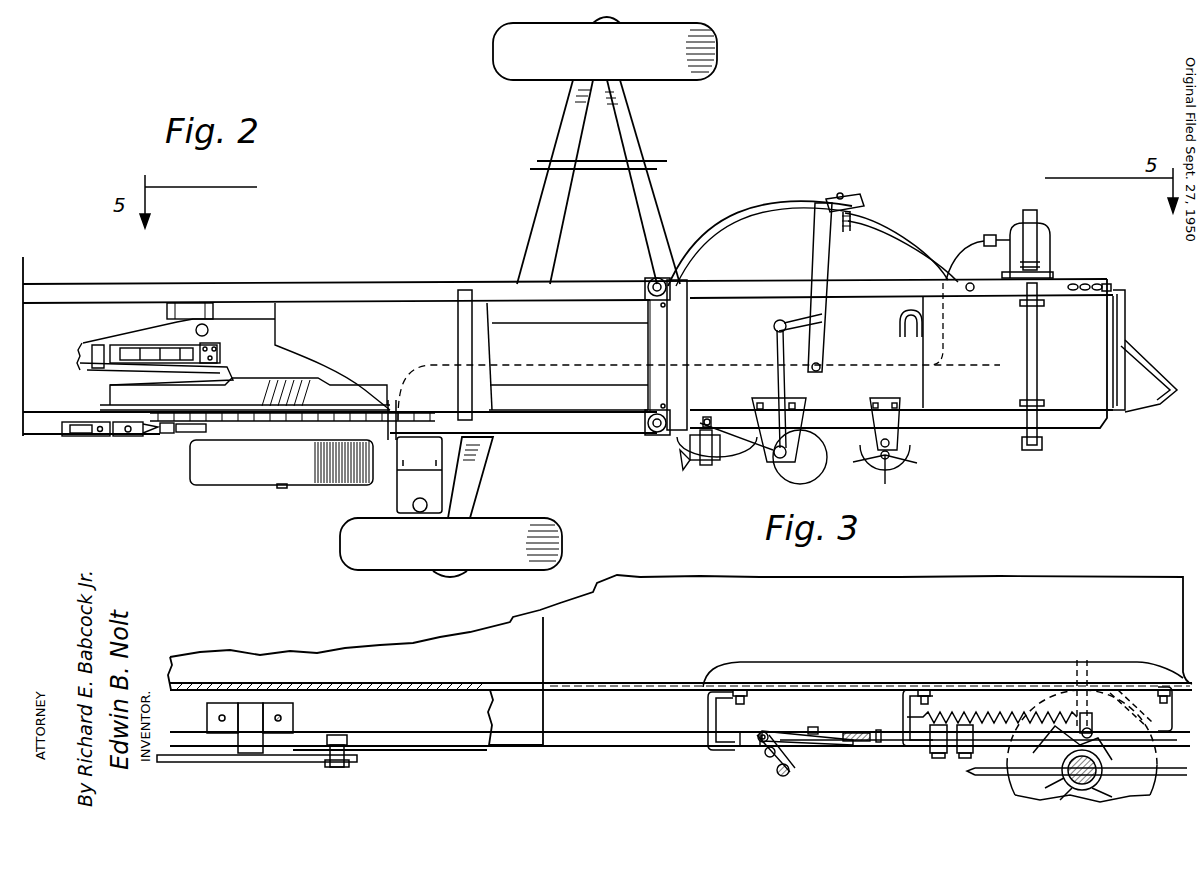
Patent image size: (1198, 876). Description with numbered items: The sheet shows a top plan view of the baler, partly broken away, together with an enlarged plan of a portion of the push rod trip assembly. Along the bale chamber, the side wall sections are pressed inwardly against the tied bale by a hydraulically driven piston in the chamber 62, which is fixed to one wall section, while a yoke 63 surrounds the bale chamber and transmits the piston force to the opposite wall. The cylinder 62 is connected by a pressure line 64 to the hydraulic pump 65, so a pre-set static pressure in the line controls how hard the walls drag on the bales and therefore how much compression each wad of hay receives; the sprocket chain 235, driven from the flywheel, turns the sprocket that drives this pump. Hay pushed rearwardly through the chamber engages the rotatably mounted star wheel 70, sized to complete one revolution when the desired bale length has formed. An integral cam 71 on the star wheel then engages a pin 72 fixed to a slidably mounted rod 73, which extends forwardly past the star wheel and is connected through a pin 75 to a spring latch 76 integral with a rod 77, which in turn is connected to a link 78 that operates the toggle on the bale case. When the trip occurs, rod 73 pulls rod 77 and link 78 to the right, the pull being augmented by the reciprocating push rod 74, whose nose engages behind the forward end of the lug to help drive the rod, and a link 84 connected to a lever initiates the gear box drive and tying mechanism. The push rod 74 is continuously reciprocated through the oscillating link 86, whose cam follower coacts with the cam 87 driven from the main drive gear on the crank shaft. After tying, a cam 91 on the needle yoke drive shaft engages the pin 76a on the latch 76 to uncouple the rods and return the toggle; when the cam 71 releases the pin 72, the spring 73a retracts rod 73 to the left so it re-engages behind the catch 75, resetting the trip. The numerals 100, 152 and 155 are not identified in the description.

In FIG. 2, the chamber 62 is at (1050, 245).
In FIG. 2, the yoke 63 is at (1037, 383).
In FIG. 2, the pressure line 64 is at (946, 360).
In FIG. 2, the hydraulic pump 65 is at (430, 487).
In FIG. 2, the star wheel 70 is at (913, 463).
In FIG. 3, the cam 71 is at (1050, 748).
In FIG. 3, the pin 72 is at (1087, 733).
In FIG. 3, the rod 73 is at (847, 733).
In FIG. 3, the spring 73a is at (1033, 713).
In FIG. 2, the push rod 74 is at (140, 434).
In FIG. 3, the push rod 74 is at (604, 735).
In FIG. 3, the pin 75 is at (813, 727).
In FIG. 3, the spring latch 76 is at (778, 730).
In FIG. 3, the pin 76a is at (749, 726).
In FIG. 3, the rod 77 is at (753, 748).
In FIG. 3, the link 78 is at (277, 762).
In FIG. 3, the link 84 is at (982, 717).
In FIG. 2, the link 86 is at (162, 437).
In FIG. 2, the cam 87 is at (180, 433).
In FIG. 3, the cam 91 is at (778, 762).
In FIG. 2, the rack 100 is at (236, 418).
In FIG. 3, the pawl lever 152 is at (793, 774).
In FIG. 2, the hoop 155 is at (816, 250).
In FIG. 2, the sprocket chain 235 is at (293, 452).